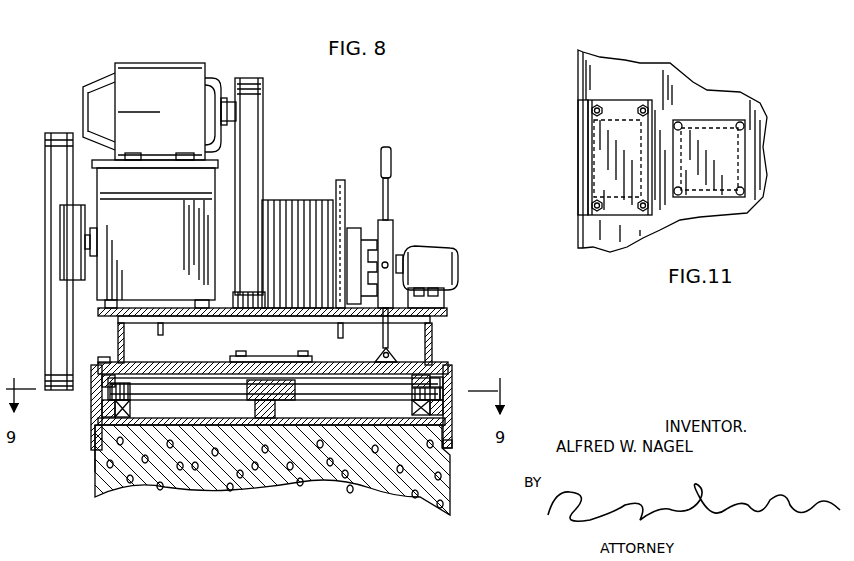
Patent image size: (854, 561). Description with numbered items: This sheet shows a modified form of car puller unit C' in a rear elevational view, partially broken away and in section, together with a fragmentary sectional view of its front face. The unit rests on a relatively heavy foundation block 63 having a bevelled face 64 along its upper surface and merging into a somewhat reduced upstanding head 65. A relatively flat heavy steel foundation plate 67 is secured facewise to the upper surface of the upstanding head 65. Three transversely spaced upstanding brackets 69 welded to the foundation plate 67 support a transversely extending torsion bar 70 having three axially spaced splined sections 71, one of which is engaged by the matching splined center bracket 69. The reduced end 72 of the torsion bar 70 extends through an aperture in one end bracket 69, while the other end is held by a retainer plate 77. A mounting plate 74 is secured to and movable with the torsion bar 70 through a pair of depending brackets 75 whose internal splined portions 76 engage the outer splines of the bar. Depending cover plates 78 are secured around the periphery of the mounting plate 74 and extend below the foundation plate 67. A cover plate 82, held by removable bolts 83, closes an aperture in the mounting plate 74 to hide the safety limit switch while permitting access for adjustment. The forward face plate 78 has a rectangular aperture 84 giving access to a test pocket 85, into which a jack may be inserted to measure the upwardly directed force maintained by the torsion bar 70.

In FIG. 8, the car puller unit C' is at (205, 185).
In FIG. 8, the foundation block 63 is at (96, 487).
In FIG. 8, the bevelled face 64 is at (97, 458).
In FIG. 8, the upstanding head 65 is at (100, 437).
In FIG. 8, the foundation plate 67 is at (213, 414).
In FIG. 8, the upstanding brackets 69 is at (280, 419).
In FIG. 8, the torsion bar 70 is at (397, 397).
In FIG. 8, the splined sections 71 is at (130, 418).
In FIG. 8, the reduced end 72 is at (440, 390).
In FIG. 11, the reduced end 72 is at (640, 70).
In FIG. 8, the mounting plate 74 is at (323, 372).
In FIG. 8, the depending brackets 75 is at (101, 416).
In FIG. 8, the splined portions 76 is at (438, 366).
In FIG. 8, the retainer plate 77 is at (101, 405).
In FIG. 8, the cover plates 78 is at (451, 446).
In FIG. 8, the cover plate 82 is at (272, 350).
In FIG. 11, the cover plate 82 is at (717, 120).
In FIG. 8, the removable bolts 83 is at (237, 356).
In FIG. 11, the removable bolts 83 is at (747, 207).
In FIG. 11, the rectangular aperture 84 is at (583, 141).
In FIG. 11, the test pocket 85 is at (584, 175).